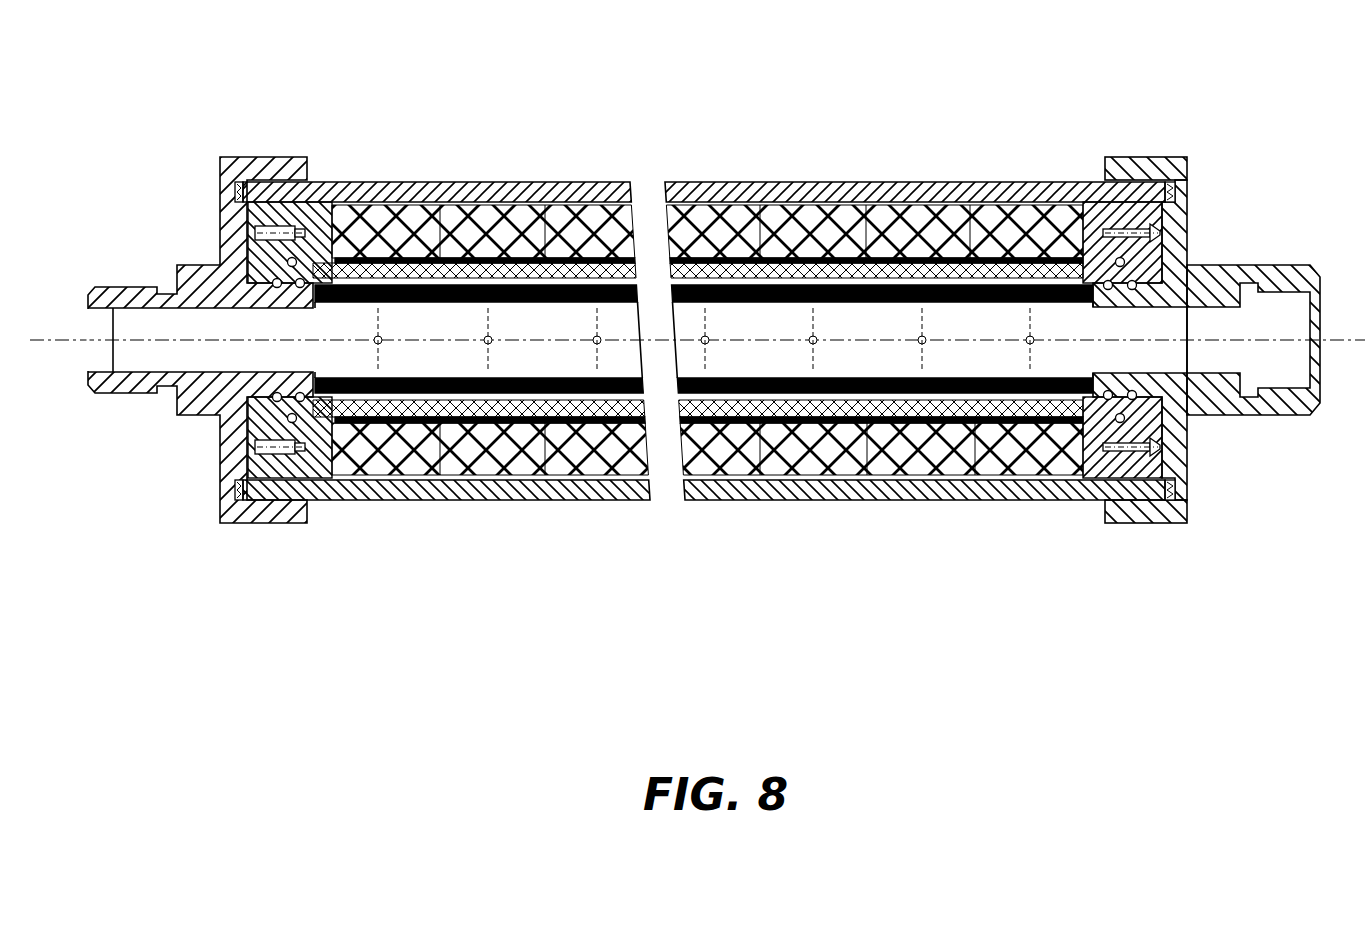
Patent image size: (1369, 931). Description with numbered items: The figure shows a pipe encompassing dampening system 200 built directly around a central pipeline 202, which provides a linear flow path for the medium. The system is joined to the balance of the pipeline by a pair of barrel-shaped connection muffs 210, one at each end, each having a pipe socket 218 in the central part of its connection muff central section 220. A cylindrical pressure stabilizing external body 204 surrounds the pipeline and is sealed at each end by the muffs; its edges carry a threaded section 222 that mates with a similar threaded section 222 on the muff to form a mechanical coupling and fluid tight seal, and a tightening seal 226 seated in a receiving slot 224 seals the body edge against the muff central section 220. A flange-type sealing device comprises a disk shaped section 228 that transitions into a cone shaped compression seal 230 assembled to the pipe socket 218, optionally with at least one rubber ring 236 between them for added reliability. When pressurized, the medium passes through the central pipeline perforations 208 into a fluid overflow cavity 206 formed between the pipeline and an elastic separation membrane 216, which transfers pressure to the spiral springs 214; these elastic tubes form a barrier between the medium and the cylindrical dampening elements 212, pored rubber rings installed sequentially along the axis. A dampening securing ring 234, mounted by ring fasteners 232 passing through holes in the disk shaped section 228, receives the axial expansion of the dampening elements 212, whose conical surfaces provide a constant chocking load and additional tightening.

The pipe encompassing dampening system 200 is at (1152, 638).
The central pipeline 202 is at (615, 313).
The pressure stabilizing external body 204 is at (428, 190).
The fluid overflow cavity 206 is at (737, 284).
The central pipeline perforation 208 is at (488, 345).
The connection muff 210 is at (268, 165).
The cylindrical dampening element 212 is at (908, 457).
The spiral springs 214 is at (565, 240).
The elastic separation membrane 216 is at (788, 270).
The pipe socket 218 is at (1160, 297).
The connection muff central section 220 is at (1177, 433).
The threaded section 222 is at (1140, 503).
The receiving slot 224 is at (1105, 190).
The tightening seal 226 is at (1175, 192).
The disk shaped section 228 is at (1160, 463).
The compression seal 230 is at (1088, 440).
The ring fastener 232 is at (243, 453).
The dampening securing ring 234 is at (310, 460).
The rubber ring 236 is at (275, 285).